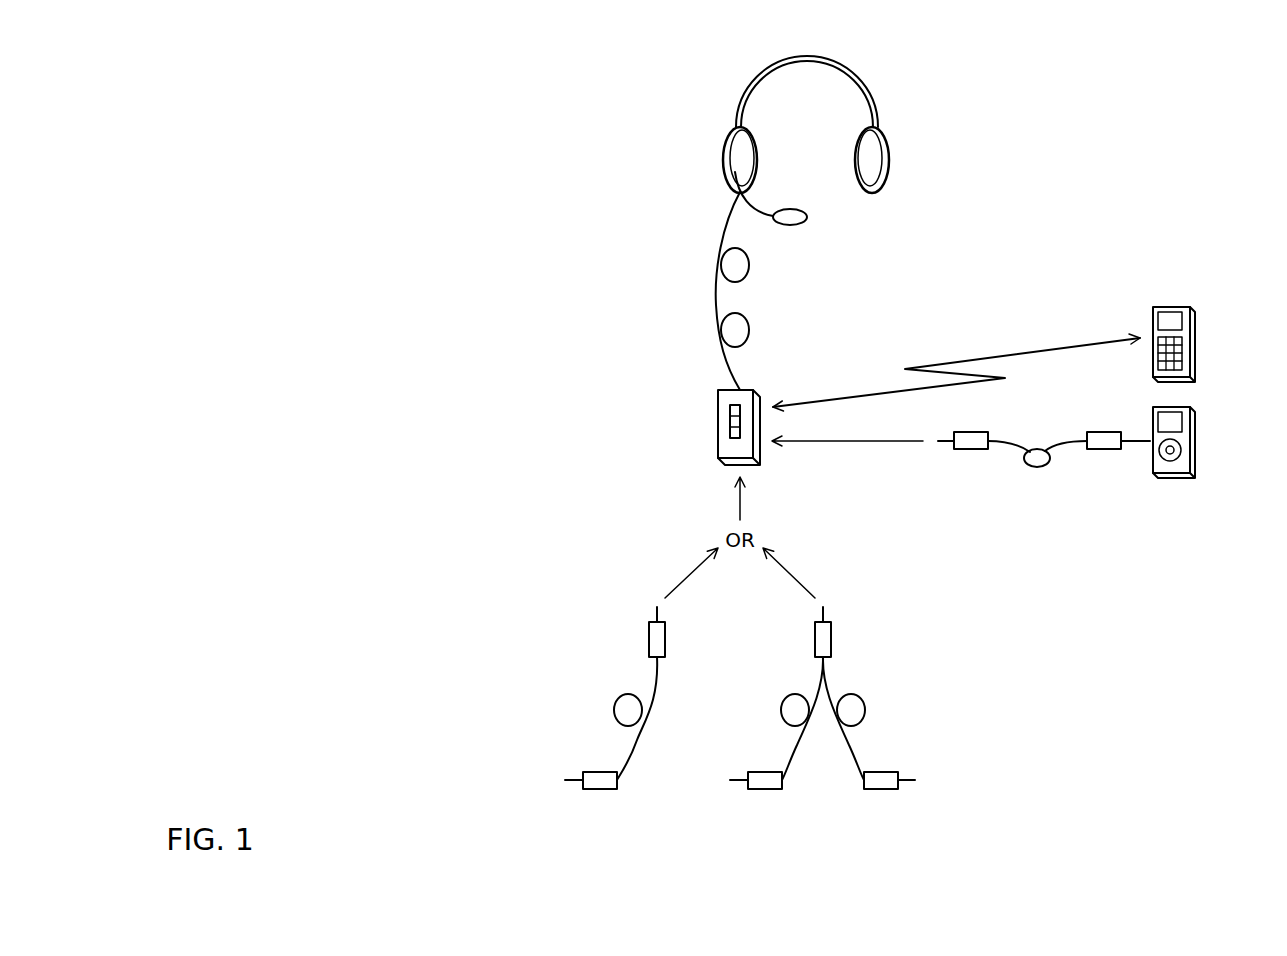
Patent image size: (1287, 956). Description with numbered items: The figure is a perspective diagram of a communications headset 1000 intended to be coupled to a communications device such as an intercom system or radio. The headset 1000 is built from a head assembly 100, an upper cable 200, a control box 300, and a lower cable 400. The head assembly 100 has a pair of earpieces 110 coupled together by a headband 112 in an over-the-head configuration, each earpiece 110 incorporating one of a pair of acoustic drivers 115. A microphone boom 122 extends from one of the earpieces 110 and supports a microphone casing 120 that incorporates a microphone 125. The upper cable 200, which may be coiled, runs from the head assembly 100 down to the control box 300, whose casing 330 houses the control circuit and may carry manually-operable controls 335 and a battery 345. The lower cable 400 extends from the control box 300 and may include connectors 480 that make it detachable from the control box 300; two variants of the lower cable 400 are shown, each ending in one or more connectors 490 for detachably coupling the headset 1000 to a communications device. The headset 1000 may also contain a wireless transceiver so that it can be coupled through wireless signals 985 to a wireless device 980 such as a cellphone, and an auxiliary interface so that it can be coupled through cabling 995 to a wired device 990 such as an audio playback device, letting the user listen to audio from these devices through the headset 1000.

The communications headset 1000 is at (470, 58).
The head assembly 100 is at (971, 60).
The earpieces 110 is at (723, 160).
The headband 112 is at (806, 56).
The acoustic drivers 115 is at (768, 141).
The microphone casing 120 is at (790, 208).
The microphone boom 122 is at (757, 204).
The microphone 125 is at (822, 223).
The upper cable 200 is at (623, 200).
The control box 300 is at (623, 390).
The casing 330 is at (718, 432).
The manually-operable controls 335 is at (730, 410).
The battery 345 is at (710, 465).
The lower cable 400 is at (540, 607).
The connectors 480 is at (648, 638).
The connectors 490 is at (600, 790).
The wireless device 980 is at (1196, 340).
The wireless signals 985 is at (1037, 352).
The wired device 990 is at (1196, 455).
The cabling 995 is at (1037, 467).